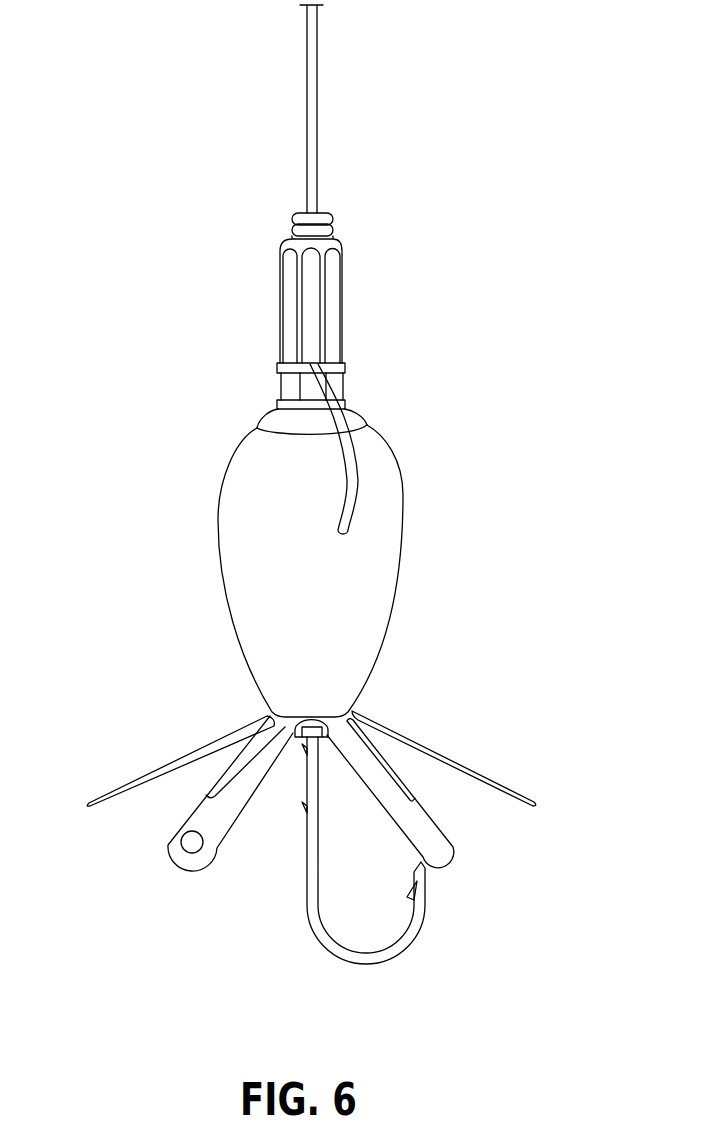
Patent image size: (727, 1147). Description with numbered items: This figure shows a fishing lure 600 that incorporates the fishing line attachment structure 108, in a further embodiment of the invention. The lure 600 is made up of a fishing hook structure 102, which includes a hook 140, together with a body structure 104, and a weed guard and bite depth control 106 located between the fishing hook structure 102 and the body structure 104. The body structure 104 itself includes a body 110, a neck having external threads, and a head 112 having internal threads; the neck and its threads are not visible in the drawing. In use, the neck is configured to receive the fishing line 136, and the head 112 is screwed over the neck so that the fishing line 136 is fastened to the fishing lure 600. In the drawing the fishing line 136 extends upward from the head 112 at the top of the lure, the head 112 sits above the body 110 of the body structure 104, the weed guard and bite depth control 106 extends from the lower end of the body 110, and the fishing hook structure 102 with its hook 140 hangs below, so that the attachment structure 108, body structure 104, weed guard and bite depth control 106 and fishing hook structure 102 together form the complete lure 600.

The fishing lure 600 is at (415, 394).
The fishing line 136 is at (316, 90).
The fishing line attachment structure 108 is at (369, 311).
The head 112 is at (348, 330).
The body structure 104 is at (280, 540).
The body 110 is at (378, 561).
The weed guard and bite depth control 106 is at (142, 762).
The fishing hook structure 102 is at (302, 868).
The hook 140 is at (362, 967).